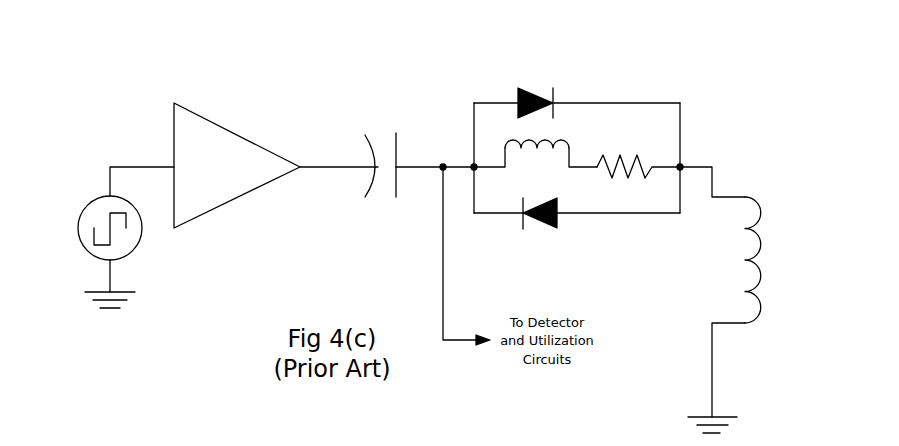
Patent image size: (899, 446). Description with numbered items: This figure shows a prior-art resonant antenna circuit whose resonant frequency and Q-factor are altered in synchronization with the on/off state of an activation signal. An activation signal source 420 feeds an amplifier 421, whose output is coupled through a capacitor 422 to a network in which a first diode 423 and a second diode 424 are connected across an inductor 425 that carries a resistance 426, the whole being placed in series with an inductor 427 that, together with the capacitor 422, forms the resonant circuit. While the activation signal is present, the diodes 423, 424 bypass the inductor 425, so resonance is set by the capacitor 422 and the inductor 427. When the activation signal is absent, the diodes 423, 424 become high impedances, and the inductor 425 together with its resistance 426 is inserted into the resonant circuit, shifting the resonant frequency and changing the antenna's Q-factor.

The pulse signal source 420 is at (78, 205).
The amplifier A 421 is at (237, 120).
The coupling capacitor C 422 is at (379, 120).
The diode D1 423 is at (543, 75).
The diode D2 424 is at (511, 220).
The inductor L_T 425 is at (568, 180).
The resistance R_T 426 is at (662, 148).
The inductor L 427 is at (772, 213).